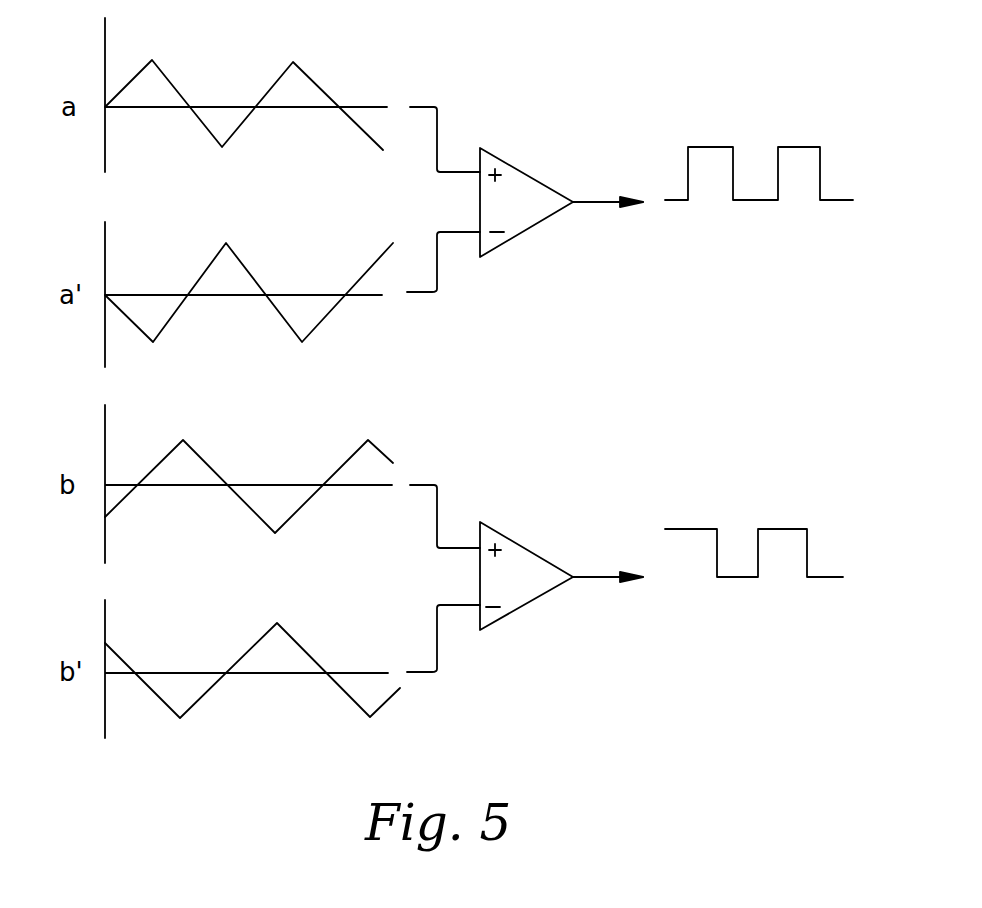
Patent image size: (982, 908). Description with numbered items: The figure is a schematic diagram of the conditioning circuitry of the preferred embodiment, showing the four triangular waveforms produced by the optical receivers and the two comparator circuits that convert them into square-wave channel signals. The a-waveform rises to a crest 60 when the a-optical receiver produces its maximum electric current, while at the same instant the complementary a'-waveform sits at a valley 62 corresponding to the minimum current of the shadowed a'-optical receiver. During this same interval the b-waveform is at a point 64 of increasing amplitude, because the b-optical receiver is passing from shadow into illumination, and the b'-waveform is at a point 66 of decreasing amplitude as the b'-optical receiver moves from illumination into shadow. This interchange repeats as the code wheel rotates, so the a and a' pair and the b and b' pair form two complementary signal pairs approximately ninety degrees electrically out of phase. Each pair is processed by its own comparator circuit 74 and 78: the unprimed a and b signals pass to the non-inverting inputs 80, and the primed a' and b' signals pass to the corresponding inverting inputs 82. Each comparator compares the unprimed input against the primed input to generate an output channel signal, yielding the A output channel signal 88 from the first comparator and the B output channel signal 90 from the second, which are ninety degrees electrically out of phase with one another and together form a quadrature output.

The crest 60 is at (152, 60).
The valley 62 is at (153, 342).
The point of increasing amplitude 64 is at (157, 463).
The point of decreasing amplitude 66 is at (158, 697).
The comparator circuit 74 is at (497, 138).
The comparator circuit 78 is at (496, 510).
The non-inverting input 80 is at (500, 180).
The inverting input 82 is at (497, 237).
The A output channel signal 88 is at (837, 150).
The B output channel signal 90 is at (837, 527).